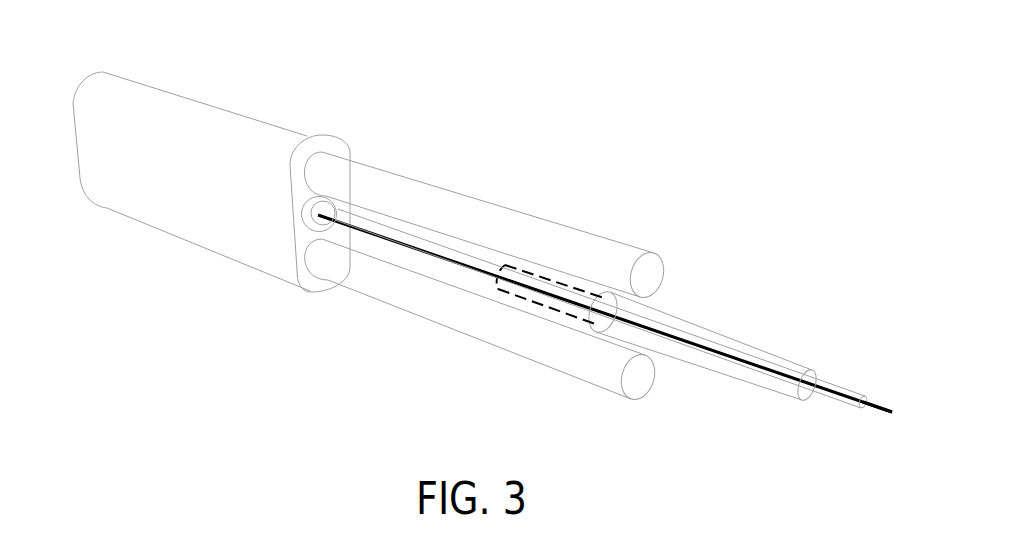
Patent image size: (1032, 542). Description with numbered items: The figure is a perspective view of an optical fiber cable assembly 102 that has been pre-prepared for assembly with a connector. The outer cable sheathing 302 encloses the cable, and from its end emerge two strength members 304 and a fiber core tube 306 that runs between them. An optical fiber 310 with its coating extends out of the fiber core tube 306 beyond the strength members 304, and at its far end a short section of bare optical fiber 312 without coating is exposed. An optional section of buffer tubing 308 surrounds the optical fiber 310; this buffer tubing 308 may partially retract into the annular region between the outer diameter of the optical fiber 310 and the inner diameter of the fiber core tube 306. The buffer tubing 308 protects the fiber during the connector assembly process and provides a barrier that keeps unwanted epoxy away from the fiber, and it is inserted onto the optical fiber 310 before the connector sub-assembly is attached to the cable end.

The optical fiber cable assembly 102 is at (596, 95).
The cable sheathing 302 is at (250, 115).
The strength members 304 is at (395, 178).
The fiber core tube 306 is at (447, 248).
The buffer tubing 308 is at (688, 325).
The optical fiber 310 is at (833, 397).
The bare optical fiber 312 is at (883, 410).